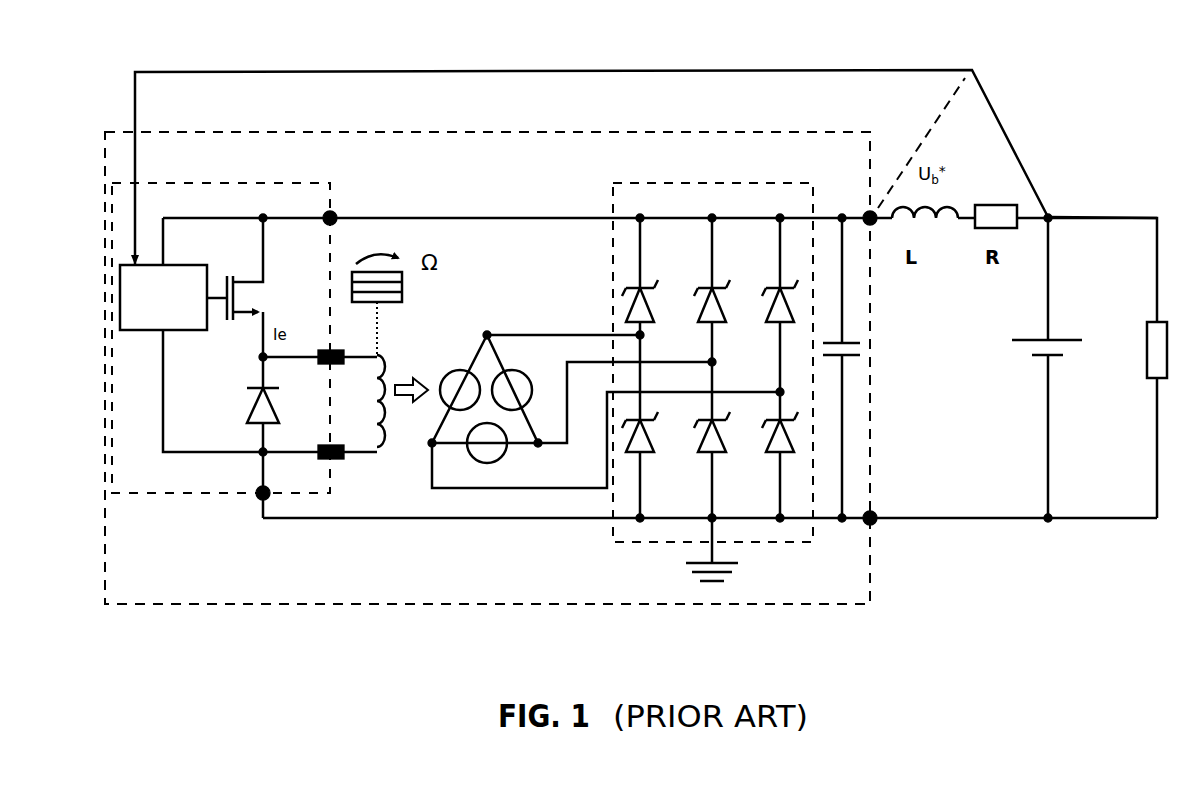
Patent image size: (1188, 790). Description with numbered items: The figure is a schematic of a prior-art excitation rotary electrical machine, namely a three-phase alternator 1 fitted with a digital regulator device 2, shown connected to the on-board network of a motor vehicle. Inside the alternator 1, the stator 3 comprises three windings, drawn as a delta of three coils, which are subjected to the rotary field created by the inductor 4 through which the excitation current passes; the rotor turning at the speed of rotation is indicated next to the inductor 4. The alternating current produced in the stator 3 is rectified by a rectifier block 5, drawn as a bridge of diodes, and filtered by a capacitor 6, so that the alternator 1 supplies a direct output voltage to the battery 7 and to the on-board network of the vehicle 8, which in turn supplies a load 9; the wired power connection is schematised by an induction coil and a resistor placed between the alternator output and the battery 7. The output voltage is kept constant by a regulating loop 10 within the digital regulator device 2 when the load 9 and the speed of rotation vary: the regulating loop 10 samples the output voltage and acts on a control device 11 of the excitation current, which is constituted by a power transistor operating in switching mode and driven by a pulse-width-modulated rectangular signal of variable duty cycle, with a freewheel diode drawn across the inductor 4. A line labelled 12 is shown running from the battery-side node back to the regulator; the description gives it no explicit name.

The three-phase alternator 1 is at (501, 120).
The digital regulator device 2 is at (272, 181).
The stator 3 is at (480, 335).
The inductor 4 is at (383, 450).
The rectifier block 5 is at (690, 183).
The capacitor 6 is at (848, 350).
The battery 7 is at (1040, 348).
The on-board network of the vehicle 8 is at (1095, 216).
The load 9 is at (1155, 355).
The regulating loop 10 is at (147, 332).
The control device 11 is at (226, 282).
The sense line 12 is at (772, 68).